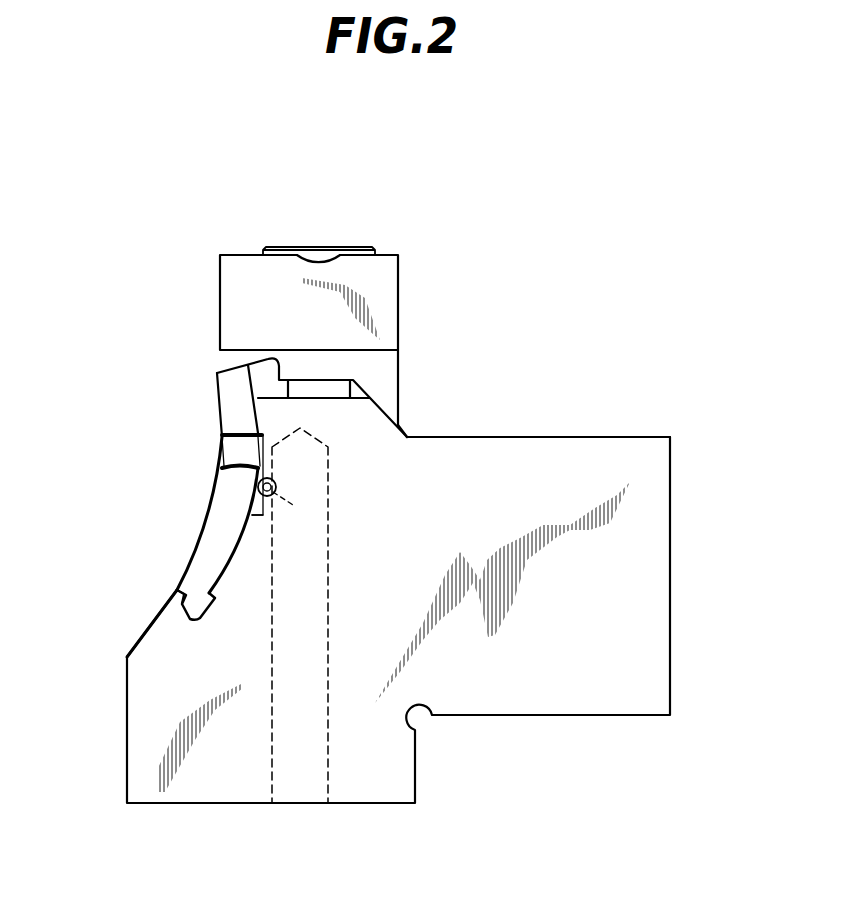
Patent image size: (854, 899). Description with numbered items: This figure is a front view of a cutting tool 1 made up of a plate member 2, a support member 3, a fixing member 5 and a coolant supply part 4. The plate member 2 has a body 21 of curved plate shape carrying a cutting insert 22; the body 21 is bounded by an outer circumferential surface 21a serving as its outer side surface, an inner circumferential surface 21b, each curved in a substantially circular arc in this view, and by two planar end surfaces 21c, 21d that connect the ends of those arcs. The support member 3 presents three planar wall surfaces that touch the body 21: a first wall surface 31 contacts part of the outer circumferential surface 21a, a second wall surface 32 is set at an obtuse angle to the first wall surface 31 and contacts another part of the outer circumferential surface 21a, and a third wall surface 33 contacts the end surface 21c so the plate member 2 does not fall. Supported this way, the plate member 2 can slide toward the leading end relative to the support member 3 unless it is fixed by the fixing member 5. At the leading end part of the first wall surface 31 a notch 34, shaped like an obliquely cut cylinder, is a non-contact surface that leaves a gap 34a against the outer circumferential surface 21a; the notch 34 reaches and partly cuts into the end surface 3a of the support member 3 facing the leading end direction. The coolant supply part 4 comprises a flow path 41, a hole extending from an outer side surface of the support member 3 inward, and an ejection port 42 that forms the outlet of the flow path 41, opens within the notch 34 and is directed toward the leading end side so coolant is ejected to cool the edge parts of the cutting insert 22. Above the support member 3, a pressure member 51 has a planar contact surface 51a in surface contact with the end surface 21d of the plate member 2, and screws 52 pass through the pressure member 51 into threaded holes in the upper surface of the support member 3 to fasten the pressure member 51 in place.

The cutting tool 1 is at (683, 247).
The plate member 2 is at (56, 433).
The body 21 is at (220, 505).
The outer circumferential surface 21a is at (227, 555).
The inner circumferential surface 21b is at (205, 535).
The end surface 21c is at (163, 610).
The end surface 21d is at (235, 367).
The cutting insert 22 is at (227, 447).
The support member 3 is at (578, 437).
The end surface 3a is at (500, 458).
The first wall surface 31 is at (258, 403).
The second wall surface 32 is at (242, 517).
The third wall surface 33 is at (175, 590).
The notch 34 is at (273, 483).
The gap 34a is at (223, 433).
The coolant supply part 4 is at (346, 451).
The flow path 41 is at (272, 740).
The ejection port 42 is at (263, 515).
The fixing member 5 is at (213, 251).
The pressure member 51 is at (230, 283).
The contact surface 51a is at (262, 364).
The screws 52 is at (320, 257).